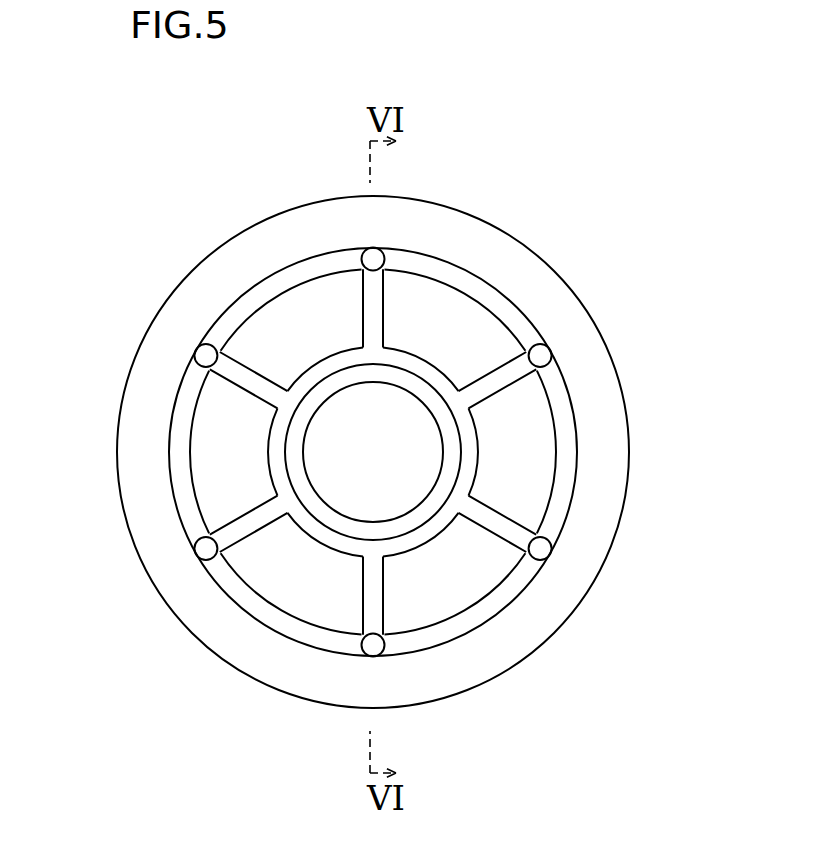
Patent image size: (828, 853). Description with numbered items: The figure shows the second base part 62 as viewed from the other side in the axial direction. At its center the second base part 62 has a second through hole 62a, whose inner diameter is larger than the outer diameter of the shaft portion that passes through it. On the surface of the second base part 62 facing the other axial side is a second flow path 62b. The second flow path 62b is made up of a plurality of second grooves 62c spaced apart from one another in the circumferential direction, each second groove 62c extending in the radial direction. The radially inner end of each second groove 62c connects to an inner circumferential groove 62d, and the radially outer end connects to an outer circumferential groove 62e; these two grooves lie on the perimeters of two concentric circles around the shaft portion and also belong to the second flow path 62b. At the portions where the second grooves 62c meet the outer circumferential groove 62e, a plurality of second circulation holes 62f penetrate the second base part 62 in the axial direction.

The second base part 62 is at (195, 232).
The second through hole 62a is at (318, 408).
The second flow path 62b is at (498, 400).
The second groove 62c is at (375, 313).
The inner circumferential groove 62d is at (465, 460).
The outer circumferential groove 62e is at (473, 293).
The second circulation hole 62f is at (549, 358).